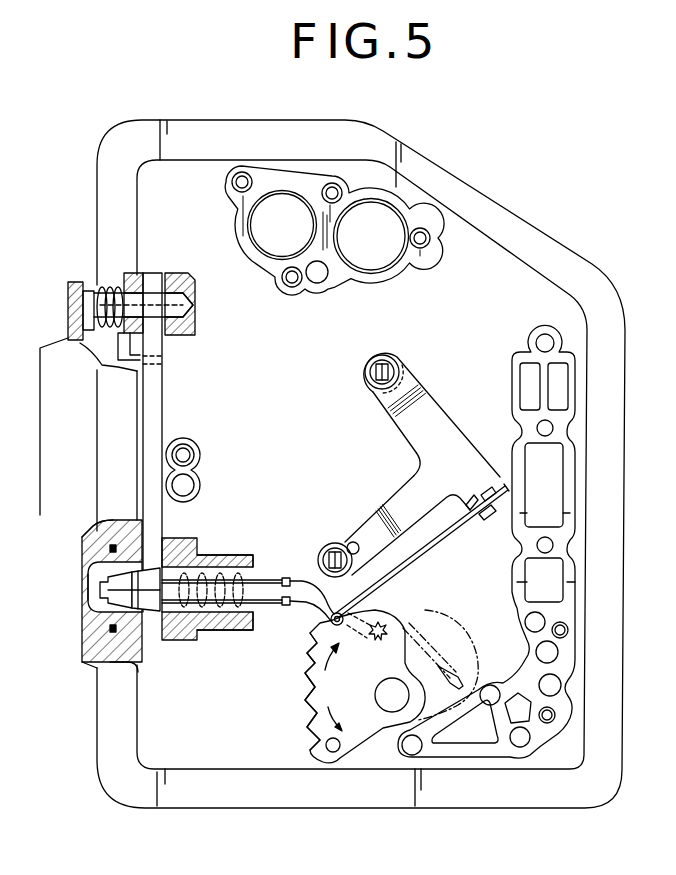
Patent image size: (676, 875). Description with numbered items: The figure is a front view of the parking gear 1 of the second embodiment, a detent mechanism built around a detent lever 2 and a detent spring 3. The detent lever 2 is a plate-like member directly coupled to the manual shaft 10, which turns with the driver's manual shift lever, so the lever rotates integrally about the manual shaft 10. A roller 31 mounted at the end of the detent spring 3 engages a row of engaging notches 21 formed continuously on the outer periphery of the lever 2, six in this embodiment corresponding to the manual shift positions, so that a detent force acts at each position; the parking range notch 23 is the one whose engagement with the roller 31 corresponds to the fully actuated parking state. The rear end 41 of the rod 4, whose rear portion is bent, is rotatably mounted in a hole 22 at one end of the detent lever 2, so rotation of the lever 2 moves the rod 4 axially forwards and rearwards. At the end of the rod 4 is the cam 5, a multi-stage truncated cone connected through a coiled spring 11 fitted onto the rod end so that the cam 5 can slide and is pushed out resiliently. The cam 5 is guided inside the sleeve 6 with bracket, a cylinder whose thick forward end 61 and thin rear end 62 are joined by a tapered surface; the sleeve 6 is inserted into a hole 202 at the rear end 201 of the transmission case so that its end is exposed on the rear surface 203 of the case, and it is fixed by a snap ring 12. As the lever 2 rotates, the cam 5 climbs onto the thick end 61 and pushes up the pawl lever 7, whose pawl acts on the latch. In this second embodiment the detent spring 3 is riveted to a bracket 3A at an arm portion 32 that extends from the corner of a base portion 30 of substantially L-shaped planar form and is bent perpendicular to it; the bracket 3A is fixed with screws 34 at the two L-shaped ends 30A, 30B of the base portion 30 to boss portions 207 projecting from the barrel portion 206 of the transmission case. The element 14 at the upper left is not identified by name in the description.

The parking gear 1 is at (80, 620).
The detent lever 2 is at (377, 710).
The detent spring 3 is at (394, 528).
The bracket 3A is at (384, 443).
The rod 4 is at (300, 580).
The cam 5 is at (106, 576).
The sleeve with bracket 6 is at (214, 574).
The pawl lever 7 is at (158, 407).
The manual shaft 10 is at (392, 712).
The coiled spring 11 is at (283, 602).
The snap ring 12 is at (115, 623).
The adjusting screw assembly 14 is at (132, 275).
The engaging notches 21 is at (377, 677).
The hole 22 is at (418, 627).
The P range notch 23 is at (330, 628).
The base portion 30 is at (384, 443).
The L-shaped end of base portion 30A is at (318, 546).
The L-shaped end of base portion 30B is at (398, 358).
The roller 31 is at (327, 624).
The arm portion 32 is at (500, 477).
The screws 34 is at (377, 357).
The rear end of the rod 41 is at (385, 628).
The forward end 61 is at (103, 602).
The rear end 62 is at (248, 556).
The rear end of transmission case 201 is at (125, 662).
The hole 202 is at (140, 638).
The rear surface 203 is at (93, 548).
The barrel portion 206 is at (290, 392).
The boss portions 207 is at (390, 397).